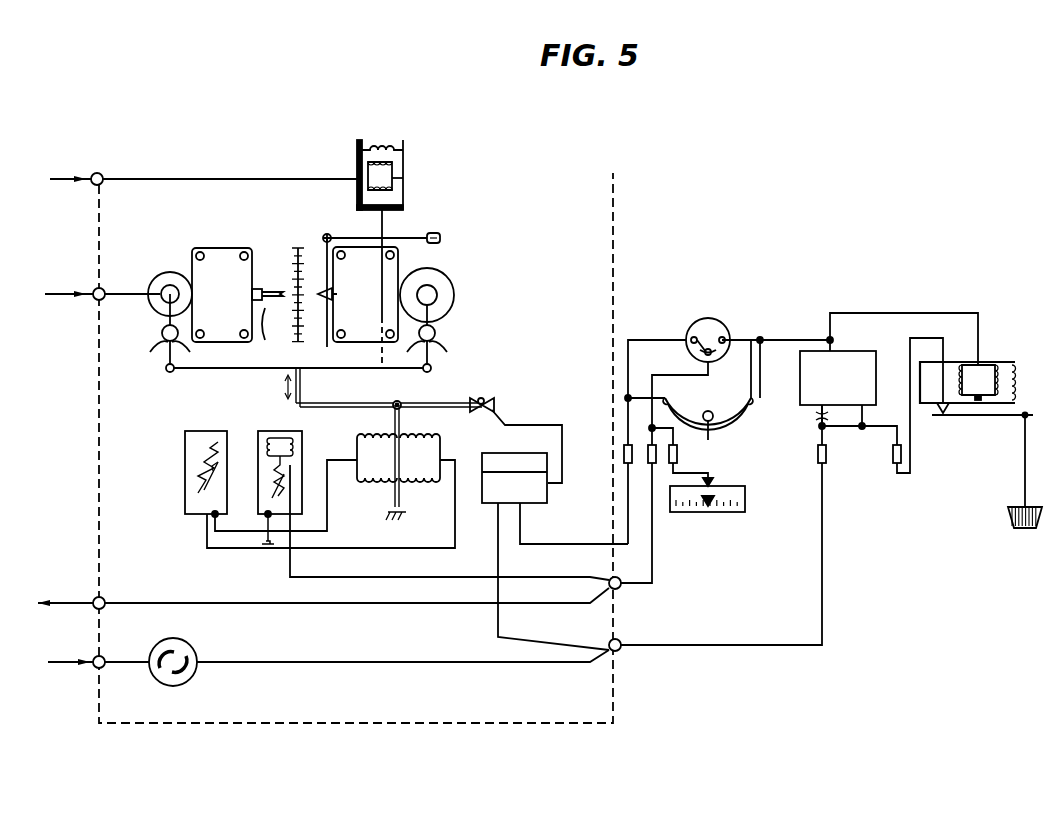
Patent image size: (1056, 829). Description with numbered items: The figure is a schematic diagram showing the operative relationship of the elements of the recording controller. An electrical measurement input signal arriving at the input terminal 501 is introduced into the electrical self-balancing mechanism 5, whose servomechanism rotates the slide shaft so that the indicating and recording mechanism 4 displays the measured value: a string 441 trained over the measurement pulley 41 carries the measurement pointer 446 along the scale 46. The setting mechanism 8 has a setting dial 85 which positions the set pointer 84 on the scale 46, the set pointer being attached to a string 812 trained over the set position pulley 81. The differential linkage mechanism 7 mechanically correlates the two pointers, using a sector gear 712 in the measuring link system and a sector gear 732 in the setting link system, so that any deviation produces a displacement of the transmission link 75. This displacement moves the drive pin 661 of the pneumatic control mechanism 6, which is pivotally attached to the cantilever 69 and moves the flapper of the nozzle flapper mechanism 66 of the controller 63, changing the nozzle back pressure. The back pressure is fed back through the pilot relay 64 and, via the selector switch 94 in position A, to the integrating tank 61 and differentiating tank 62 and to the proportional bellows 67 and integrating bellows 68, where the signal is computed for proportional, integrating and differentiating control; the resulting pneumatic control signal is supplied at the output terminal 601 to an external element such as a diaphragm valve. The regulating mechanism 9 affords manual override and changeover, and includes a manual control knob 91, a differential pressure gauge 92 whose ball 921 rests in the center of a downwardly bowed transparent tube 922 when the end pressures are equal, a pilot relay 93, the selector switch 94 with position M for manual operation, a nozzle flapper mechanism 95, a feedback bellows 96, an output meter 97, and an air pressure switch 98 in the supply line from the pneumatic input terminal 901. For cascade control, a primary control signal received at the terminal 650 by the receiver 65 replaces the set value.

The electrical self-balancing mechanism 5 is at (135, 210).
The indicating and recording mechanism 4 is at (258, 212).
The pneumatic control mechanism 6 is at (398, 624).
The differential linkage mechanism 7 is at (204, 378).
The setting mechanism 8 is at (435, 222).
The regulating mechanism 9 is at (824, 272).
The measurement pulley 41 is at (169, 272).
The scale 46 is at (298, 248).
The integrating tank 61 is at (185, 458).
The differentiating tank 62 is at (256, 446).
The controller 63 is at (408, 528).
The pilot relay 64 is at (546, 495).
The receiver 65 is at (357, 164).
The nozzle flapper mechanism 66 is at (496, 408).
The proportional bellows 67 is at (432, 444).
The integrating bellows 68 is at (358, 440).
The cantilever 69 is at (402, 502).
The transmission link 75 is at (302, 392).
The set position pulley 81 is at (450, 286).
The set pointer 84 is at (349, 302).
The setting dial 85 is at (440, 238).
The manual control knob 91 is at (1014, 520).
The differential pressure gauge 92 is at (708, 404).
The pilot relay 93 is at (846, 351).
The selector switch 94 is at (708, 318).
The nozzle flapper mechanism 95 is at (956, 416).
The feedback bellows 96 is at (984, 363).
The output meter 97 is at (716, 512).
The air pressure switch 98 is at (196, 678).
The string 441 is at (218, 247).
The measurement pointer 446 is at (278, 340).
The input terminal 501 is at (93, 286).
The output terminal 601 is at (95, 596).
The terminal 650 is at (104, 172).
The drive pin 661 is at (423, 404).
The sector gear 712 is at (160, 334).
The sector gear 732 is at (443, 341).
The string 812 is at (352, 246).
The pneumatic input terminal 901 is at (95, 655).
The ball 921 is at (713, 441).
The tube 922 is at (748, 406).